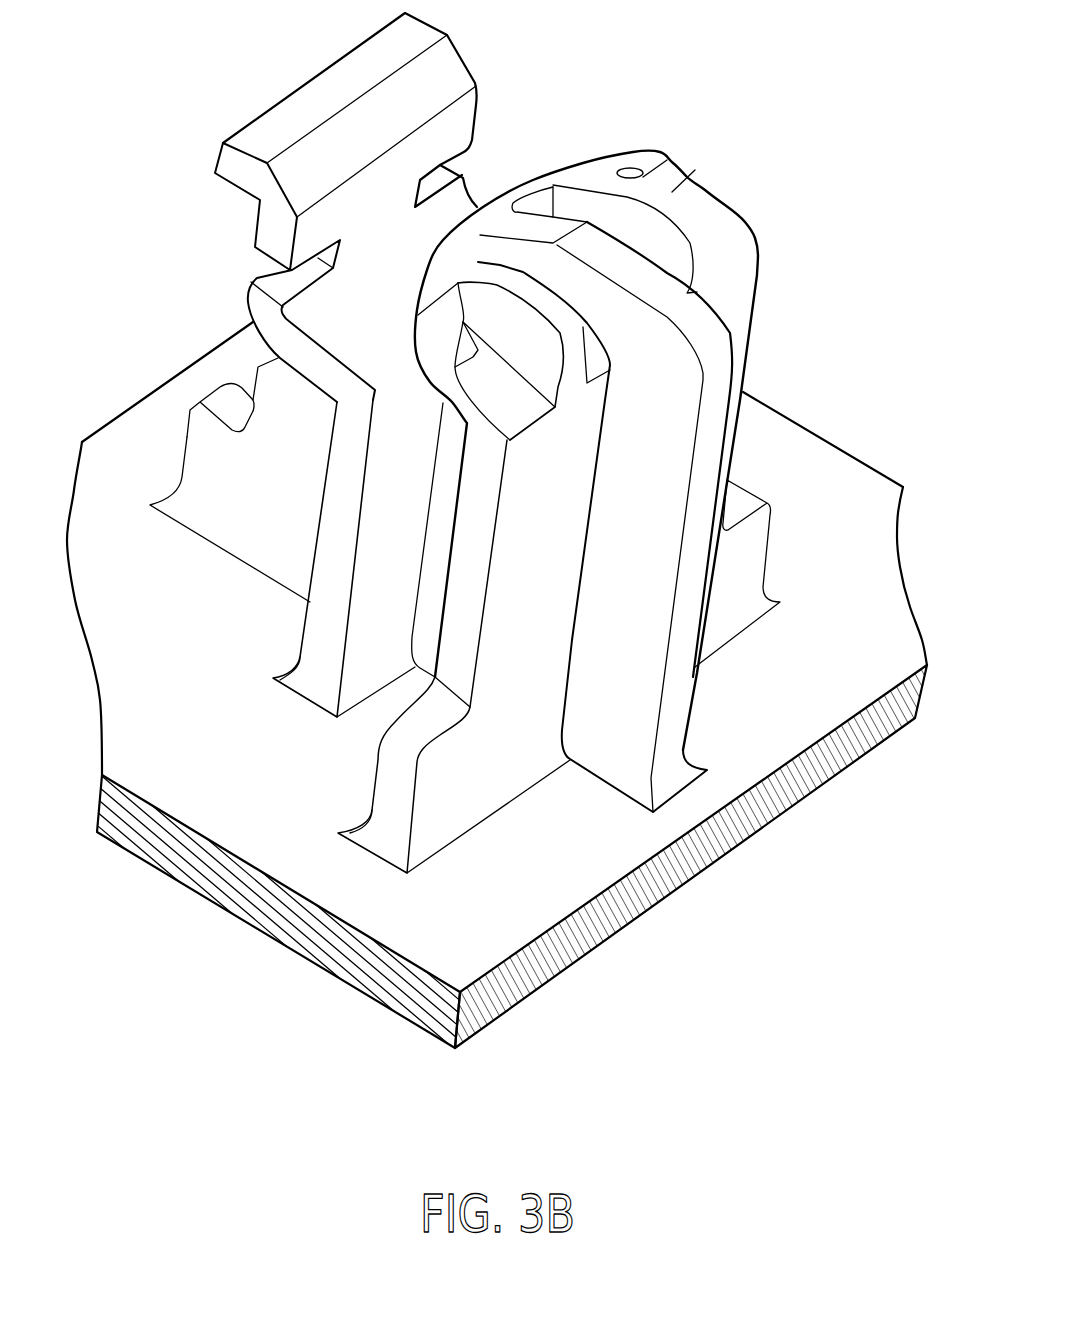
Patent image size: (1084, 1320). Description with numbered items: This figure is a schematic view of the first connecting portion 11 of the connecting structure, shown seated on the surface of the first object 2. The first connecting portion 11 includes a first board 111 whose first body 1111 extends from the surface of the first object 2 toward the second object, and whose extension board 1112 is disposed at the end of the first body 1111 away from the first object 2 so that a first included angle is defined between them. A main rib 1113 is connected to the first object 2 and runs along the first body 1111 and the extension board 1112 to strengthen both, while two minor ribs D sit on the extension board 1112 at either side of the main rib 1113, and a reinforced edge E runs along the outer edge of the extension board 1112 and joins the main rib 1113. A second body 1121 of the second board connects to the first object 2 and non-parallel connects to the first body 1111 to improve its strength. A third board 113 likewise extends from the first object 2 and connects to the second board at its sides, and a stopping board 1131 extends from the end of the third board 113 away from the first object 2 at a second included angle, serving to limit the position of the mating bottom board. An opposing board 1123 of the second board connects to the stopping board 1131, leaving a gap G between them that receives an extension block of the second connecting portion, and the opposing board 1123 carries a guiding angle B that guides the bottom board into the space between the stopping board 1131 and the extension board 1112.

The first object 2 is at (747, 808).
The first connecting portion 11 is at (503, 439).
The first board 111 is at (680, 468).
The first body 1111 is at (738, 348).
The extension board 1112 is at (735, 242).
The main rib 1113 is at (707, 327).
The third board 113 is at (277, 473).
The stopping board 1131 is at (287, 332).
The second body 1121 is at (252, 487).
The opposing board 1123 is at (342, 87).
The guiding angle B is at (370, 137).
The minor ribs D is at (548, 307).
The reinforced edge E is at (430, 330).
The gap G is at (322, 258).